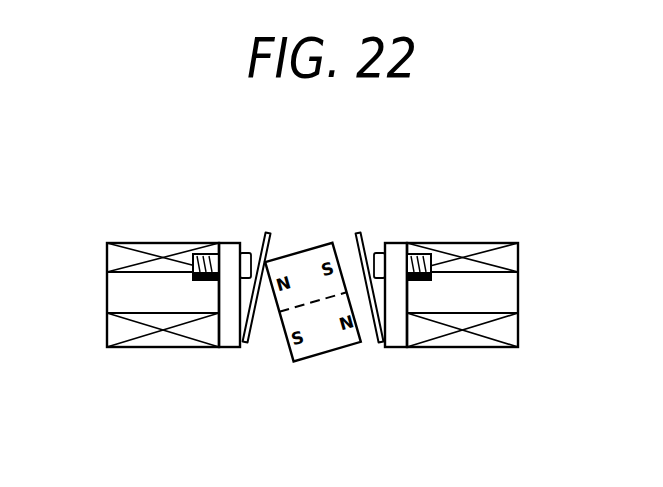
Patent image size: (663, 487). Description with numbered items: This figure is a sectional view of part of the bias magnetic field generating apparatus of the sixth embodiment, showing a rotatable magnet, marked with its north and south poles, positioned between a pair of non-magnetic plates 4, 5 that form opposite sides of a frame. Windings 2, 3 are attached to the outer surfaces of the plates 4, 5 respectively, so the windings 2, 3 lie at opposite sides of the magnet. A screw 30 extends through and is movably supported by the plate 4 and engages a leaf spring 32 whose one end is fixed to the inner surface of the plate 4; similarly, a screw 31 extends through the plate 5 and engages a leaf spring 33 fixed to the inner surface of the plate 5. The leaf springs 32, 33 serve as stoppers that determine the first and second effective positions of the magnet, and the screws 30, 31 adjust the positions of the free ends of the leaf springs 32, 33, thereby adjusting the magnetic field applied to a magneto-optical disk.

The winding 2 is at (490, 243).
The winding 3 is at (170, 342).
The plate 4 is at (395, 342).
The plate 5 is at (230, 342).
The screw 30 is at (418, 245).
The screw 31 is at (200, 245).
The leaf spring 32 is at (357, 230).
The leaf spring 33 is at (250, 305).